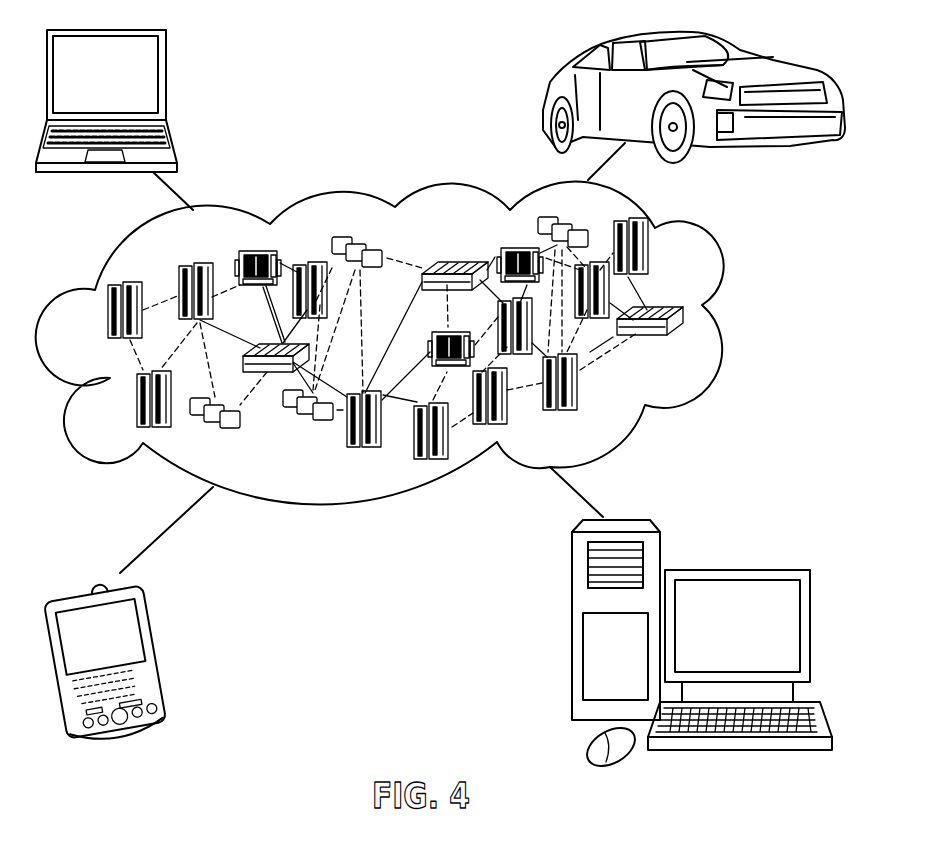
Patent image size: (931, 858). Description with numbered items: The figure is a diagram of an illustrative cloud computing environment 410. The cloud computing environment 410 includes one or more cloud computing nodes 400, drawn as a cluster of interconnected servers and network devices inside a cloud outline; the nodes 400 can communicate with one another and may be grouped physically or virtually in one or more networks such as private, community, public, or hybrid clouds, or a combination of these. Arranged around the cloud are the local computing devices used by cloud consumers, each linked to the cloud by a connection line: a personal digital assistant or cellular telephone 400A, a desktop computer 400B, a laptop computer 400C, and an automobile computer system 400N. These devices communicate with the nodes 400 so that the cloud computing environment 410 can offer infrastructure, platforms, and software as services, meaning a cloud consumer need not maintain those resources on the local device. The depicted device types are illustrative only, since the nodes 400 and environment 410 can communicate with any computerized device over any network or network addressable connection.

The cloud computing nodes 400 is at (690, 350).
The cloud computing environment 410 is at (740, 318).
The personal digital assistant (PDA) or cellular telephone 400A is at (158, 655).
The desktop computer 400B is at (735, 570).
The laptop computer 400C is at (166, 82).
The automobile computer system 400N is at (550, 97).